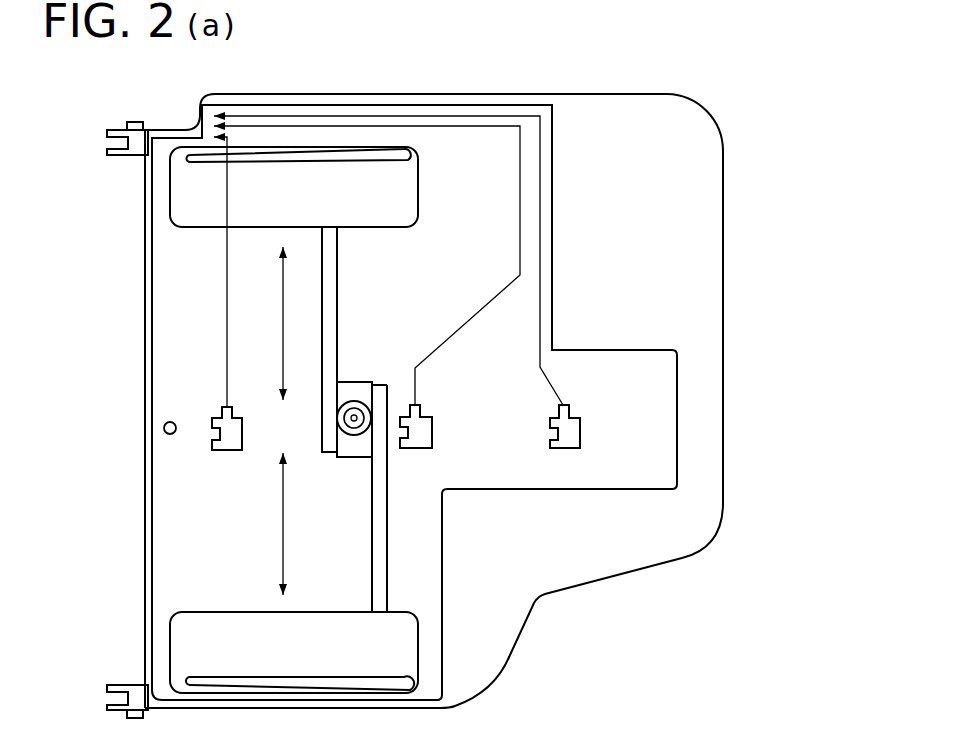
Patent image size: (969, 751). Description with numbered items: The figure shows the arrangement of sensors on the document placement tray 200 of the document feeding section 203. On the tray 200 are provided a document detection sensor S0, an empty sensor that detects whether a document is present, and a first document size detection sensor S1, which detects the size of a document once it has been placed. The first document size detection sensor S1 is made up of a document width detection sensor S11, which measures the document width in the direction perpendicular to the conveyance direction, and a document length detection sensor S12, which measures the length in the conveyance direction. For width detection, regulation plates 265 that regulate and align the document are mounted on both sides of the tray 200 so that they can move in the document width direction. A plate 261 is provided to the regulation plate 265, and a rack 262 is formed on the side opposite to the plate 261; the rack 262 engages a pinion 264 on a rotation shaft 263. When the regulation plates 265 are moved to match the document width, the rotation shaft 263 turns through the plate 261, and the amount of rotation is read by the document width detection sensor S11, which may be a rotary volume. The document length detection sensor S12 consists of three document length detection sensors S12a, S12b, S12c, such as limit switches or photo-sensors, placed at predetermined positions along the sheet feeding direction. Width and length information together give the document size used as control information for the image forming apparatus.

The document placement tray 200 is at (723, 162).
The document feeding section 203 is at (582, 86).
The plate 261 is at (330, 257).
The rack 262 is at (337, 293).
The rotation shaft 263 is at (354, 401).
The pinion 264 is at (348, 440).
The regulation plate 265 is at (325, 157).
The document detection sensor S0 is at (164, 428).
The first document size detection sensor S1 is at (321, 428).
The document width detection sensor S11 is at (367, 440).
The document length detection sensor S12 is at (477, 286).
The document length detection sensor S12a is at (220, 416).
The document length detection sensor S12b is at (432, 433).
The document length detection sensor S12c is at (569, 414).